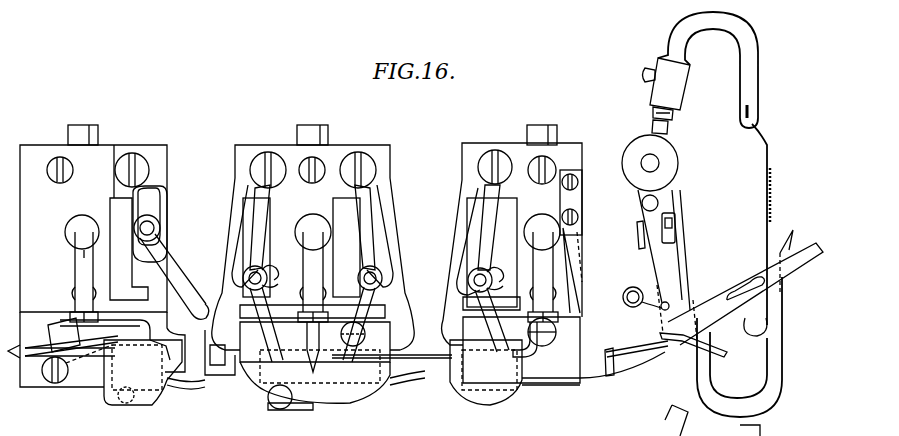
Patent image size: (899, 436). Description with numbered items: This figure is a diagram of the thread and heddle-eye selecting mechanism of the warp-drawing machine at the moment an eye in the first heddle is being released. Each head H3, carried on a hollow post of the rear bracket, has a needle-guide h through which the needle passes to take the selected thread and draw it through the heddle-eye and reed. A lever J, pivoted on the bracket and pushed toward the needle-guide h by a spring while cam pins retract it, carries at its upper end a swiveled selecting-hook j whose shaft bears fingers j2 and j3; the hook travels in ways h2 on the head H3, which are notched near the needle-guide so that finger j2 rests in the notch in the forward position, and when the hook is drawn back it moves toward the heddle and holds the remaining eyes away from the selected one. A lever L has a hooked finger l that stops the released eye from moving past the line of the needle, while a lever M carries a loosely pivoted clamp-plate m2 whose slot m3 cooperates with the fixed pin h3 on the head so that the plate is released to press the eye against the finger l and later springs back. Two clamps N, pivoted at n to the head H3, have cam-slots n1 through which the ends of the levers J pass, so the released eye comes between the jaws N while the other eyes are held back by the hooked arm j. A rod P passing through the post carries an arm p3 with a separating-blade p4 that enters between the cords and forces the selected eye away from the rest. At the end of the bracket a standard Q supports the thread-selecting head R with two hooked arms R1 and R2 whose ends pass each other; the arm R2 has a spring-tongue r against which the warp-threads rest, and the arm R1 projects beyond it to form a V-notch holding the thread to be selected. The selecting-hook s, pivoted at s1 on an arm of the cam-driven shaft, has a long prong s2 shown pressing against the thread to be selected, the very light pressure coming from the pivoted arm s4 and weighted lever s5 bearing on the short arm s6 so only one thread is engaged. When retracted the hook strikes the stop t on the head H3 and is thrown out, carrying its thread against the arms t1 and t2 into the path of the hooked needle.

The head H3 is at (301, 221).
The rod P is at (312, 293).
The arm p3 is at (314, 269).
The separating-blade p4 is at (316, 374).
The pivot of clamps N n is at (118, 172).
The cam-slot n1 is at (395, 215).
The lever J is at (154, 228).
The selecting-hook j is at (324, 298).
The finger j2 is at (388, 279).
The finger j3 is at (386, 265).
The needle-guide h is at (61, 359).
The ways h2 is at (313, 246).
The fixed pin h3 is at (271, 342).
The lever M is at (342, 331).
The clamp-plate m2 is at (238, 339).
The slot m3 is at (89, 364).
The clamp N is at (342, 276).
The lever L is at (342, 373).
The finger l is at (373, 387).
The stop t is at (577, 268).
The arm t1 is at (624, 369).
The arm t2 is at (611, 351).
The standard Q is at (656, 124).
The thread-selecting head R is at (720, 214).
The arm R1 is at (752, 365).
The arm R2 is at (728, 98).
The spring-tongue r is at (762, 195).
The selecting-hook s is at (745, 294).
The pivot s1 is at (693, 337).
The long prong s2 is at (777, 283).
The pivoted arm s4 is at (662, 265).
The weighted lever s5 is at (670, 219).
The short arm s6 is at (640, 300).